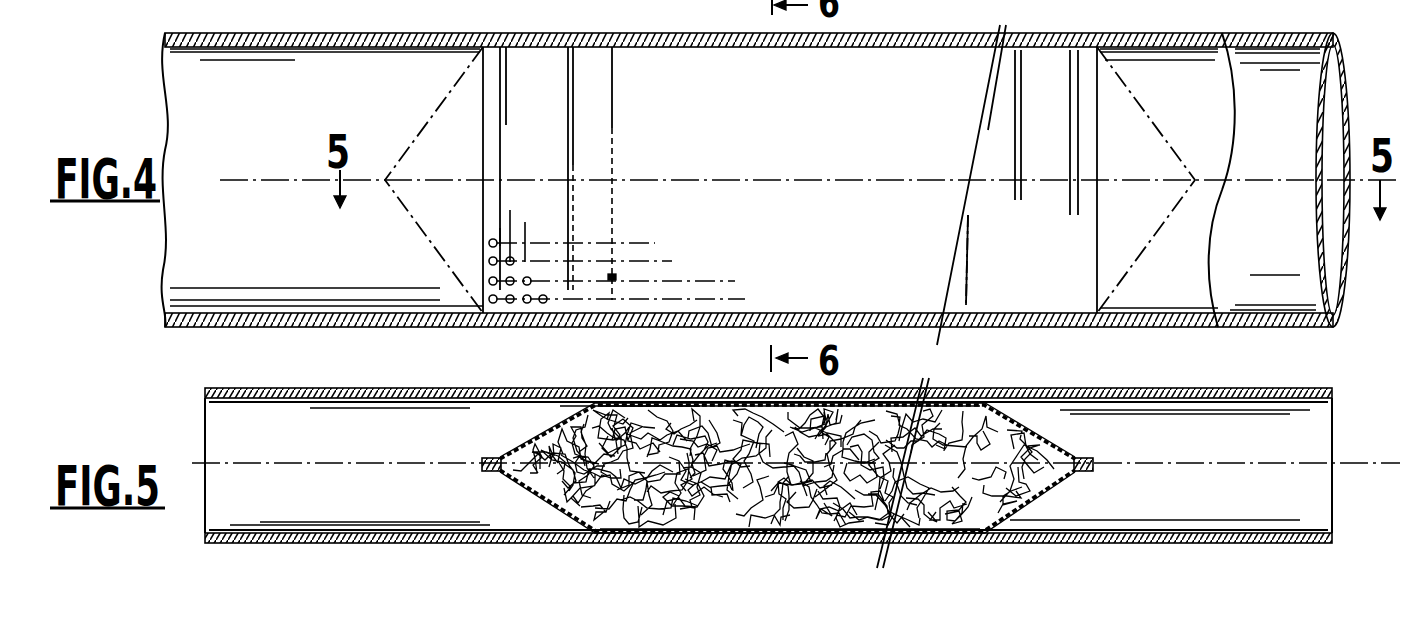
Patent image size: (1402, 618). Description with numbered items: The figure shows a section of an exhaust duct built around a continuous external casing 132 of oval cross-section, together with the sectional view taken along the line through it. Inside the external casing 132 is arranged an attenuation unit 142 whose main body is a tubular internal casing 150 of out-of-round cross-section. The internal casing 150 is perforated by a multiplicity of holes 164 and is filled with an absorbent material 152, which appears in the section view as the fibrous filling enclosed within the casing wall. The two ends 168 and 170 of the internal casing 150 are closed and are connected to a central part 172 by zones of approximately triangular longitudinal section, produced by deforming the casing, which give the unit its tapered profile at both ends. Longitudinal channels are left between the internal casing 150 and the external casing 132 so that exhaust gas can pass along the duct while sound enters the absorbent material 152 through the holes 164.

In FIG. 4, the external casing 132 is at (660, 33).
In FIG. 5, the external casing 132 is at (610, 358).
In FIG. 4, the attenuation unit 142 is at (612, 278).
In FIG. 5, the attenuation unit 142 is at (556, 512).
In FIG. 5, the tubular internal casing 150 is at (656, 534).
In FIG. 5, the absorbent material 152 is at (930, 502).
In FIG. 4, the holes 164 is at (490, 260).
In FIG. 5, the end of the internal casing 168 is at (495, 477).
In FIG. 5, the end of the internal casing 170 is at (1085, 473).
In FIG. 4, the central part 172 is at (407, 214).